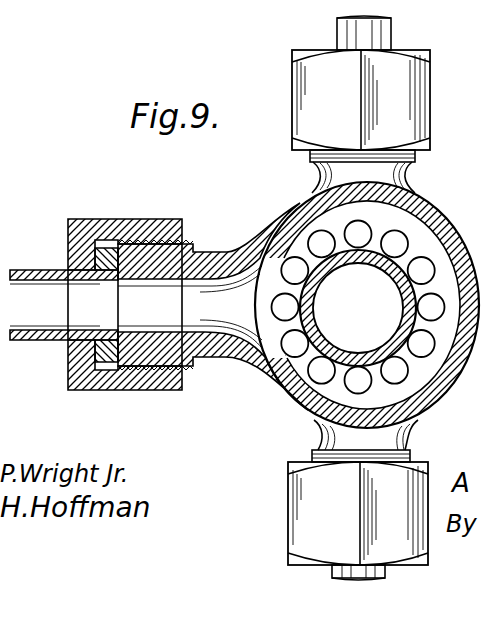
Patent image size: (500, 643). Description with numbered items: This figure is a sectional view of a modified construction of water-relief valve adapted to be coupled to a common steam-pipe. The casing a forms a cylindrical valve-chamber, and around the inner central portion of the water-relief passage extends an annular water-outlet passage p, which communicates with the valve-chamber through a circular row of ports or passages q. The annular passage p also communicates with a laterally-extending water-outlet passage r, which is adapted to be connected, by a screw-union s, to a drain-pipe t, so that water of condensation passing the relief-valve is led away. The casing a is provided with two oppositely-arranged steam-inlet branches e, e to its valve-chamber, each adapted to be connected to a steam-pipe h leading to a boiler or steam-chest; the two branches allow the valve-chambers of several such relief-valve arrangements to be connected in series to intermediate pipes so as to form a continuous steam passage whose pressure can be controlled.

The casing a is at (453, 235).
The steam-inlet branch e is at (385, 177).
The steam-pipe h is at (360, 33).
The annular water-outlet passage p is at (431, 342).
The ports or passages q is at (350, 215).
The laterally-extending water-outlet passage r is at (213, 306).
The screw-union s is at (132, 219).
The drain-pipe t is at (64, 305).